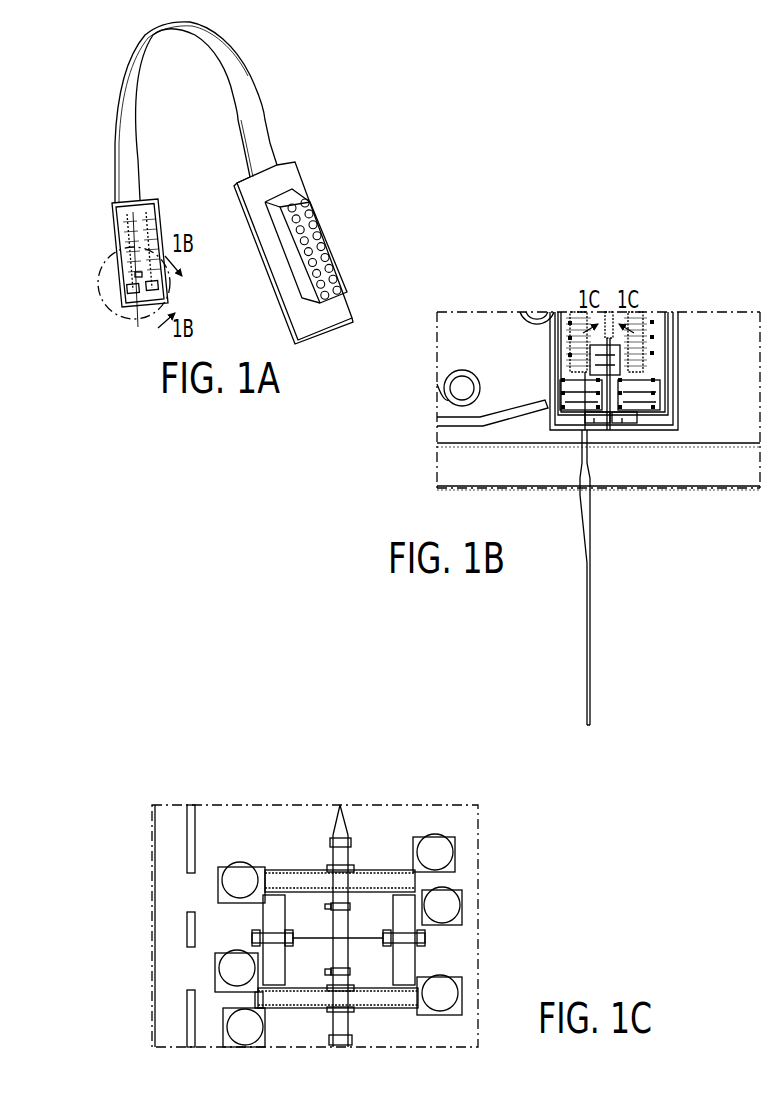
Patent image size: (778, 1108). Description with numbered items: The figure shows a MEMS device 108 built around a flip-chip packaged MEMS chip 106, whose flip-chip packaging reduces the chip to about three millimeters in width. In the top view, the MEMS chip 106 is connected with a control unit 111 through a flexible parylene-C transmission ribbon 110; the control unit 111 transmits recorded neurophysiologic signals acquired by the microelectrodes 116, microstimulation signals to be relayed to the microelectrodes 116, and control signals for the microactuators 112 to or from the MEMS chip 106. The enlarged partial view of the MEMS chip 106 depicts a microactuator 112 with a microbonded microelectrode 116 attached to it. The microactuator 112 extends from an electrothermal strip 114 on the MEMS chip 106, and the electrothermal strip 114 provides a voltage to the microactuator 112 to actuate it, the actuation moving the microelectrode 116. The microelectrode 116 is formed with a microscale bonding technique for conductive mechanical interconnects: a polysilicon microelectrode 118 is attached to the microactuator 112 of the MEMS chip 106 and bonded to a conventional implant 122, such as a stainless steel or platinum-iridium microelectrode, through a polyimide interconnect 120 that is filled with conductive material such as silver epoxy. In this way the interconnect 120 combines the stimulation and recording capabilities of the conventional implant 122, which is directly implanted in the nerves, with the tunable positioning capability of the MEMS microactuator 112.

In FIG. 1A, the MEMS chip 106 is at (113, 242).
In FIG. 1B, the MEMS chip 106 is at (554, 276).
In FIG. 1A, the MEMS device 108 is at (86, 108).
In FIG. 1A, the flexible parylene-C transmission ribbon 110 is at (233, 47).
In FIG. 1A, the control unit 111 is at (313, 202).
In FIG. 1B, the microactuator 112 is at (573, 340).
In FIG. 1C, the microactuator 112 is at (191, 786).
In FIG. 1C, the electrothermal strip 114 is at (328, 925).
In FIG. 1B, the microelectrode 116 is at (582, 562).
In FIG. 1B, the polysilicon microelectrode 118 is at (625, 428).
In FIG. 1B, the polyimide interconnect 120 is at (605, 450).
In FIG. 1B, the conventional implant 122 is at (605, 567).